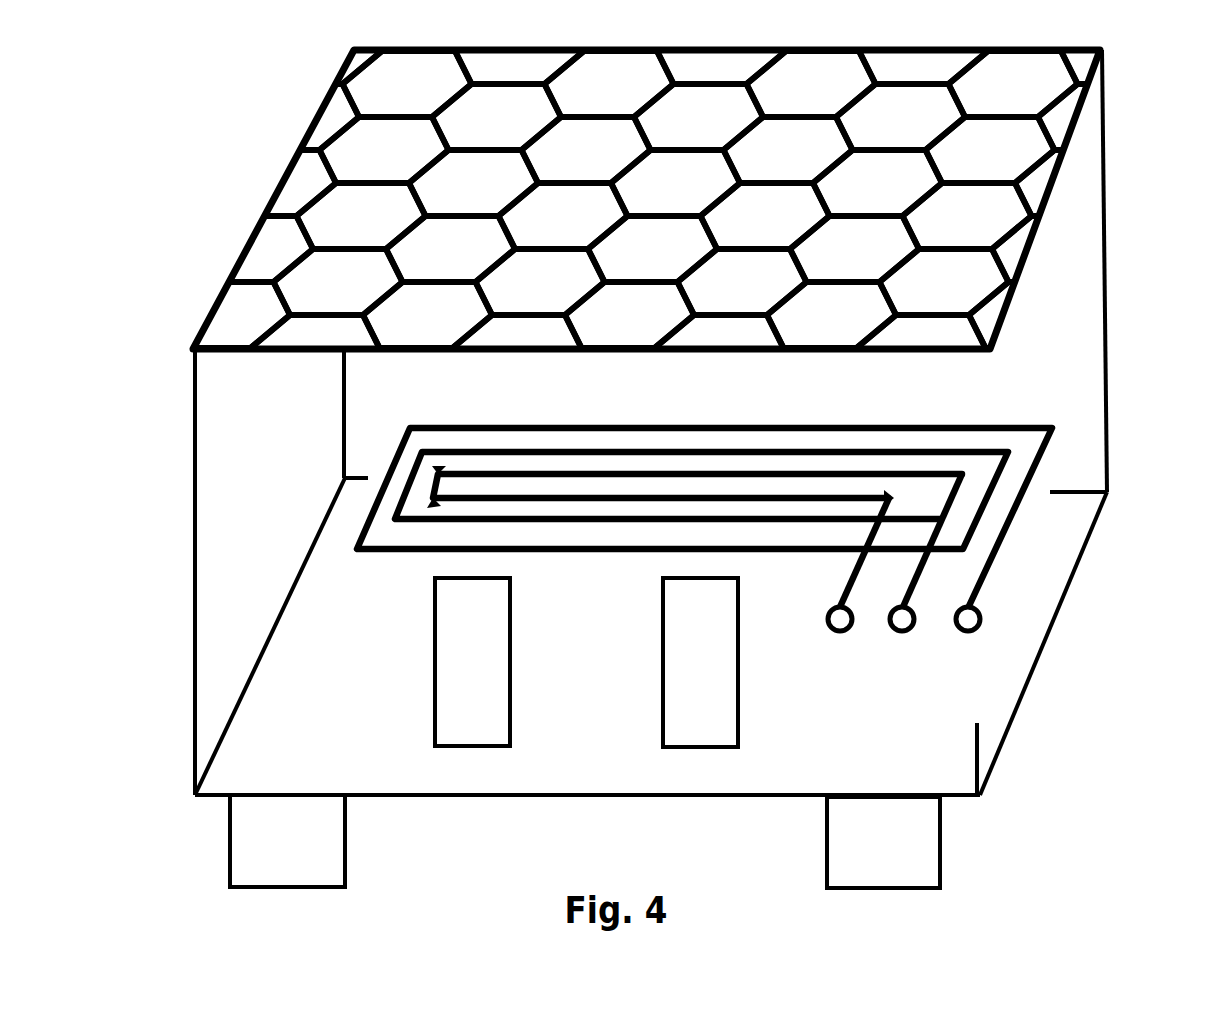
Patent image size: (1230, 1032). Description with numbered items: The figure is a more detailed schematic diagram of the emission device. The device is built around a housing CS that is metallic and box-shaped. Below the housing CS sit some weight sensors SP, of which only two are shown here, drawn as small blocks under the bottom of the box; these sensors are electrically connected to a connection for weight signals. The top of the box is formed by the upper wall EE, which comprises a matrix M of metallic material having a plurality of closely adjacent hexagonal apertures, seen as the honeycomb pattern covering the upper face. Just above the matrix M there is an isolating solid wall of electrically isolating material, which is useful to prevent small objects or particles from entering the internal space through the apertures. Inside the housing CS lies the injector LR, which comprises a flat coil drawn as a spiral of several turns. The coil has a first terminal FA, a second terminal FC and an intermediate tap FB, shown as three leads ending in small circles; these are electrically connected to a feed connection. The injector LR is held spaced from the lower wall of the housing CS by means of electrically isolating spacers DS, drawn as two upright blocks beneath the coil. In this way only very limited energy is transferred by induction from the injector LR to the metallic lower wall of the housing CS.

The upper wall EE is at (248, 155).
The matrix M is at (631, 207).
The housing CS is at (1078, 322).
The injector LR is at (370, 427).
The first terminal FA is at (836, 598).
The intermediate tap FB is at (907, 586).
The second terminal FC is at (951, 653).
The electrically isolating spacers DS is at (586, 662).
The weight sensors SP is at (585, 841).